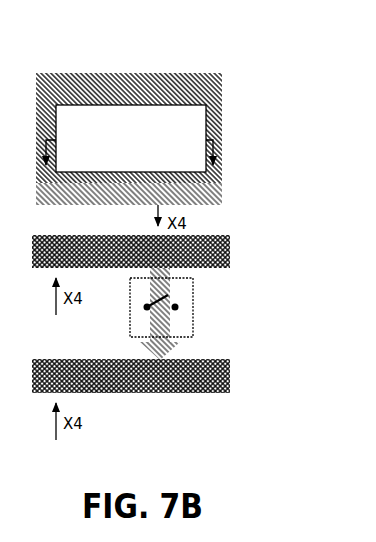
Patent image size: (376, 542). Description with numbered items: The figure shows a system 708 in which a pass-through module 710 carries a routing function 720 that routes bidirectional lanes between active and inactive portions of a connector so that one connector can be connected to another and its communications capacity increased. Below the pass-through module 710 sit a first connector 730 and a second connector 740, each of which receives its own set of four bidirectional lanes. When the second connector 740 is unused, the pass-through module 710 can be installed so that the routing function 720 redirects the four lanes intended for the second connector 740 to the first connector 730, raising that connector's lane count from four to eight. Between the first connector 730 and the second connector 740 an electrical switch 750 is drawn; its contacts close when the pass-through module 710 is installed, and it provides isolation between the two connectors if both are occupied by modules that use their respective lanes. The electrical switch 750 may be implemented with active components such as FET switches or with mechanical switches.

The system 708 is at (262, 45).
The pass-through module 710 is at (163, 137).
The routing function 720 is at (207, 122).
The first connector 730 is at (230, 249).
The second connector 740 is at (230, 376).
The electrical switch 750 is at (193, 325).